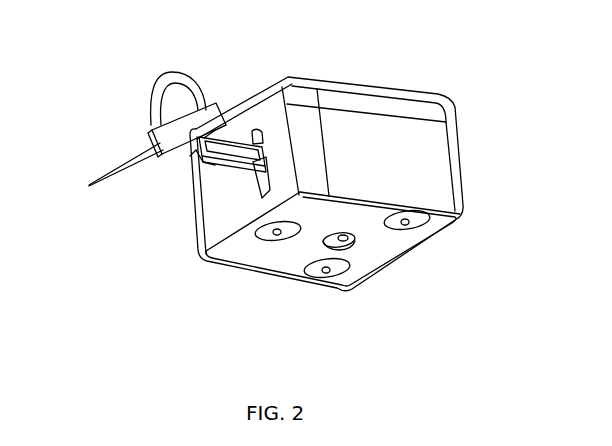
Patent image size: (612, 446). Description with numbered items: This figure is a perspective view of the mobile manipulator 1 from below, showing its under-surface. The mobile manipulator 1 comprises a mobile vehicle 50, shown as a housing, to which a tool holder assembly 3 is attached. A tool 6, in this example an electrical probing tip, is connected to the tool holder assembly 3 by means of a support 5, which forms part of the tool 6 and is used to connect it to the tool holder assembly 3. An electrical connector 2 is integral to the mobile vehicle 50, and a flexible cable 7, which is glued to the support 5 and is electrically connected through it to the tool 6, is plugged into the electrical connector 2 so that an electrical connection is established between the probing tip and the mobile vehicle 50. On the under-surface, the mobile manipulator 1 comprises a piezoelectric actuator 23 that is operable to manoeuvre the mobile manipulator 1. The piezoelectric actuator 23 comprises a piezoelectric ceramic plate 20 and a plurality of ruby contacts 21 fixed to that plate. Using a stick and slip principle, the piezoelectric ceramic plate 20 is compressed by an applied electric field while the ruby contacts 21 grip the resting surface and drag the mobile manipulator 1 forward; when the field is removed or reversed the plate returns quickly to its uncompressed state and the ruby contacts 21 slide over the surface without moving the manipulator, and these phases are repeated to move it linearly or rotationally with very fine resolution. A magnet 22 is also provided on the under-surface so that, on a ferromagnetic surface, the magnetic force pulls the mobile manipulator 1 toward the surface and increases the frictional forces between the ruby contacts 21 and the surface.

The mobile manipulator 1 is at (355, 130).
The mobile vehicle 50 is at (422, 168).
The piezoelectric ceramic plate 20 is at (233, 250).
The ruby contacts 21 is at (277, 232).
The magnet 22 is at (342, 241).
The piezoelectric actuator 23 is at (387, 235).
The electrical connector 2 is at (227, 138).
The tool holder assembly 3 is at (207, 160).
The support 5 is at (183, 128).
The tool 6 is at (113, 160).
The flexible cable 7 is at (152, 82).